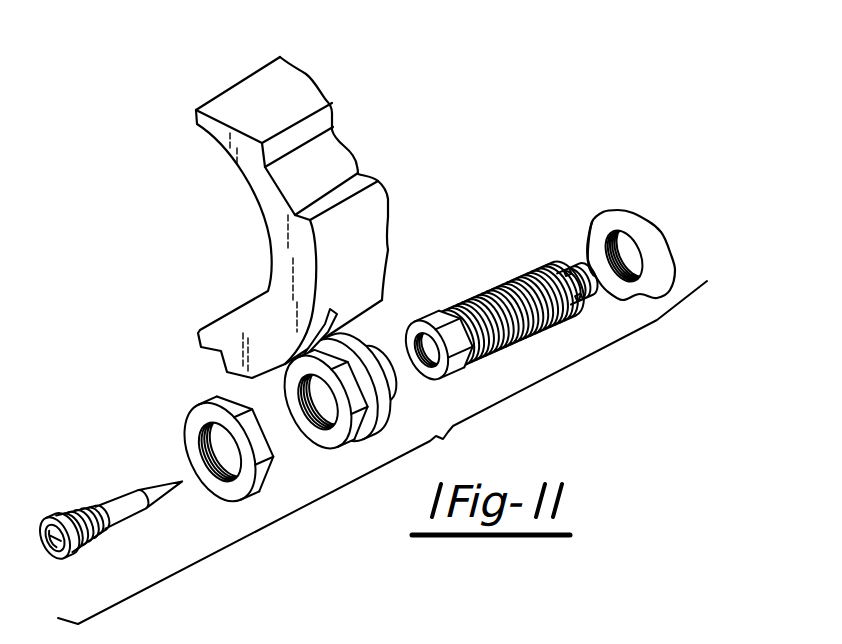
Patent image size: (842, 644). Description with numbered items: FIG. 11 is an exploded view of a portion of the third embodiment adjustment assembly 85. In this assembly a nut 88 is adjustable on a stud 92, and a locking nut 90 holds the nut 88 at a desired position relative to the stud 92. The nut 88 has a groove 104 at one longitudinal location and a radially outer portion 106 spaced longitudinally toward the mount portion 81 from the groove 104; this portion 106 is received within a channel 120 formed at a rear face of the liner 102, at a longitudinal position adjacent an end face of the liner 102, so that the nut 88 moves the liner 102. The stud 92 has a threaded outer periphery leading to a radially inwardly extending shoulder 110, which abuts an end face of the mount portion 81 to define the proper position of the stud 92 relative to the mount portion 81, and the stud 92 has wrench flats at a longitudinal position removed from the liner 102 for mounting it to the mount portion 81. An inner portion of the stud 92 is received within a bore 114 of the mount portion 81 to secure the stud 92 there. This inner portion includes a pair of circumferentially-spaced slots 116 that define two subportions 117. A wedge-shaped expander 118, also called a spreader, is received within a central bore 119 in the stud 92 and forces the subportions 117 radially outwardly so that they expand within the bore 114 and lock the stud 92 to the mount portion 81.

The mount portion 81 is at (632, 220).
The adjustment assembly 85 is at (382, 452).
The nut 88 is at (347, 458).
The locking nut 90 is at (187, 414).
The stud 92 is at (500, 292).
The liner 102 is at (299, 85).
The groove 104 is at (388, 448).
The radially outer portion 106 is at (397, 386).
The shoulder 110 is at (543, 262).
The bore 114 is at (645, 267).
The slots 116 is at (587, 272).
The subportions 117 is at (556, 262).
The wedge-shaped expander 118 is at (102, 504).
The central bore 119 is at (397, 335).
The channel 120 is at (391, 264).